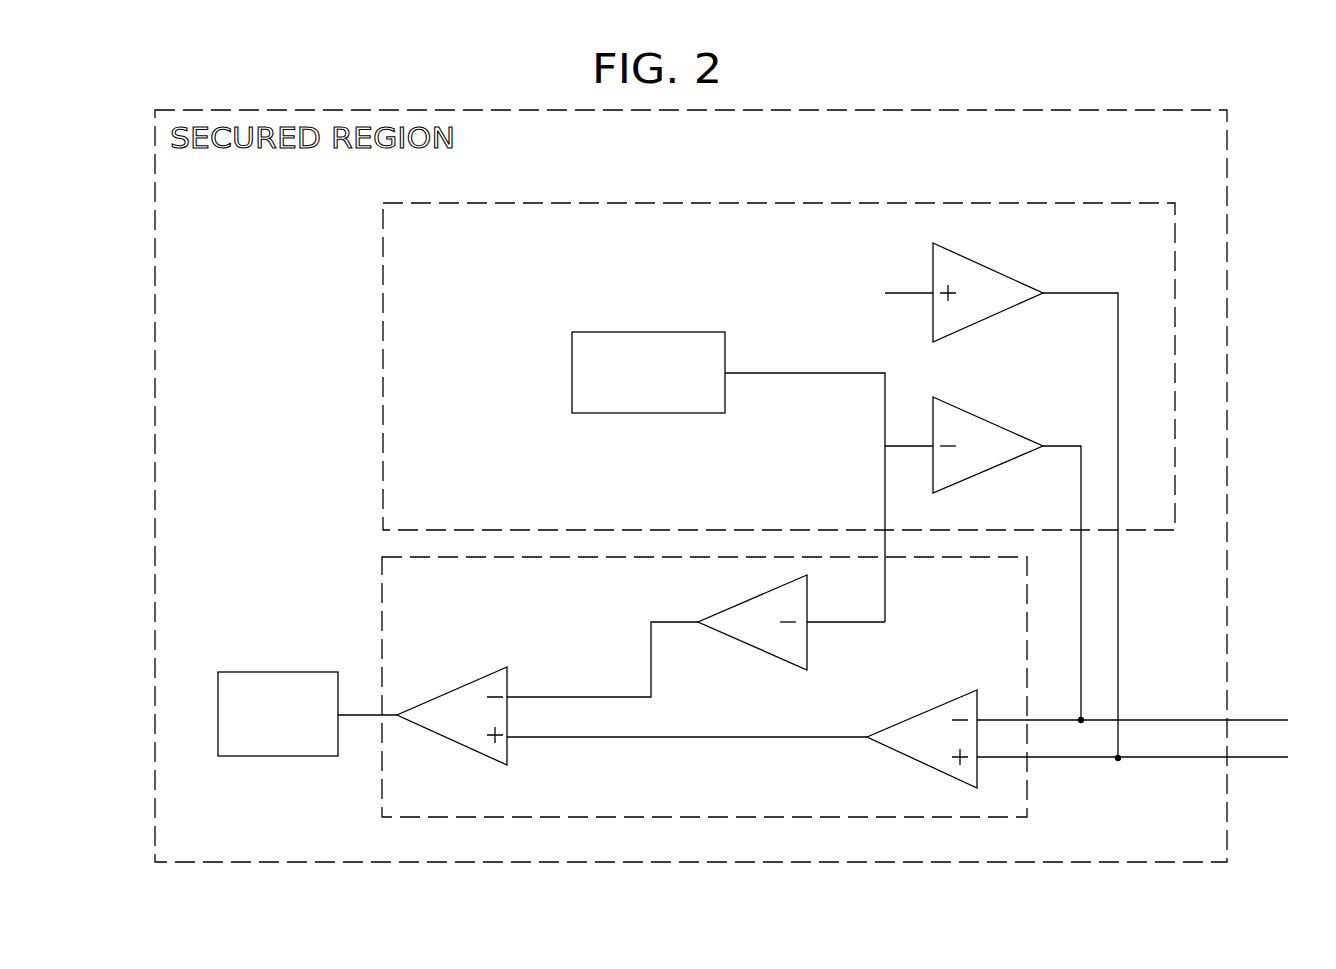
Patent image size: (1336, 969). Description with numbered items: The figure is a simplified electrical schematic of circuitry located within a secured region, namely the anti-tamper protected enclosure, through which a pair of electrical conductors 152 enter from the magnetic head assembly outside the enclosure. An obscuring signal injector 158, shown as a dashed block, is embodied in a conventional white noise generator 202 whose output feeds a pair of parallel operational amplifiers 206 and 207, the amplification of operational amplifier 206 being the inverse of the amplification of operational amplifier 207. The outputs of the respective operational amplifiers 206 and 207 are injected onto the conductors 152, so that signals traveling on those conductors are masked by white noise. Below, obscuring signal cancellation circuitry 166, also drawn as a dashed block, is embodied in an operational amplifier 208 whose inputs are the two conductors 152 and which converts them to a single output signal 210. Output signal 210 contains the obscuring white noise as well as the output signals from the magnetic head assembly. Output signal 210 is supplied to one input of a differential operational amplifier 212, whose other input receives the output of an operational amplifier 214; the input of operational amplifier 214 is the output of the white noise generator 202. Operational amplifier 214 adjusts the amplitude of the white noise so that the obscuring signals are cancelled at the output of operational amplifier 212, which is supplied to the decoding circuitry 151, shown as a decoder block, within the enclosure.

The decoding circuitry 151 is at (238, 672).
The electrical conductors 152 is at (1257, 722).
The obscuring signal injector 158 is at (520, 203).
The obscuring signal cancellation circuitry 166 is at (381, 583).
The white noise generator 202 is at (684, 332).
The operational amplifier 206 is at (983, 262).
The operational amplifier 207 is at (983, 418).
The operational amplifier 208 is at (947, 703).
The output signal 210 is at (727, 738).
The differential operational amplifier 212 is at (458, 686).
The operational amplifier 214 is at (735, 644).